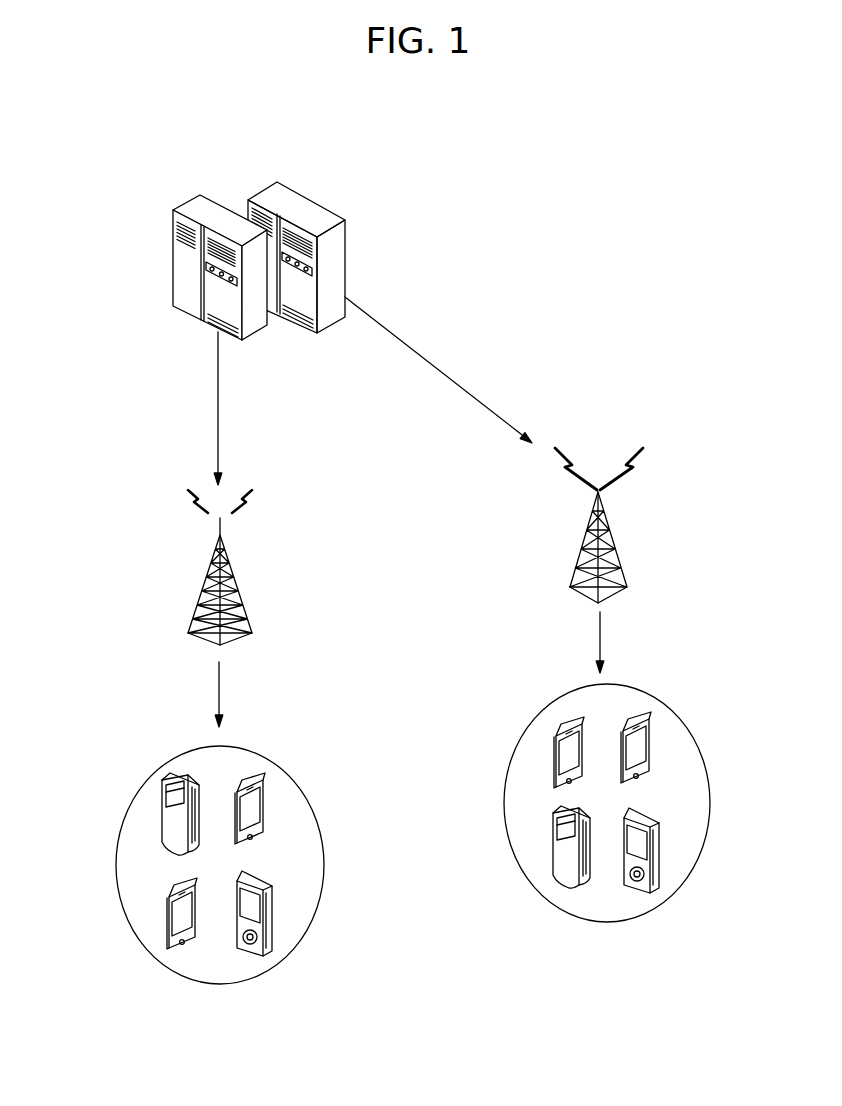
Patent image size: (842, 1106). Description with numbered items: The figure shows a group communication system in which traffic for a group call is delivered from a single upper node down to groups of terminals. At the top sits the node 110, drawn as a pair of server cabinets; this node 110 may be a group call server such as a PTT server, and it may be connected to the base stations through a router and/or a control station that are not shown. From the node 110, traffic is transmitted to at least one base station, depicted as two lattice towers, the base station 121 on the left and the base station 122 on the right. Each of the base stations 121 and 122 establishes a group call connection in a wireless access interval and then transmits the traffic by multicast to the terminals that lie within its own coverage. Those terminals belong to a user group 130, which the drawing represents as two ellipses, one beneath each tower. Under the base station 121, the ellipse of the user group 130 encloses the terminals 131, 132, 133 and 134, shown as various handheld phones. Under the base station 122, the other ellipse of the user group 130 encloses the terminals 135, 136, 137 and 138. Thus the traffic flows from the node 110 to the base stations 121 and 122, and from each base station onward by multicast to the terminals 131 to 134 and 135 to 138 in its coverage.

The node 110 is at (235, 180).
The base station 121 is at (210, 572).
The base station 122 is at (613, 537).
The user group 130 is at (218, 984).
The terminal 131 is at (170, 810).
The terminal 132 is at (172, 947).
The terminal 133 is at (270, 948).
The terminal 134 is at (260, 795).
The terminal 135 is at (557, 750).
The terminal 136 is at (573, 860).
The terminal 137 is at (650, 893).
The terminal 138 is at (647, 723).